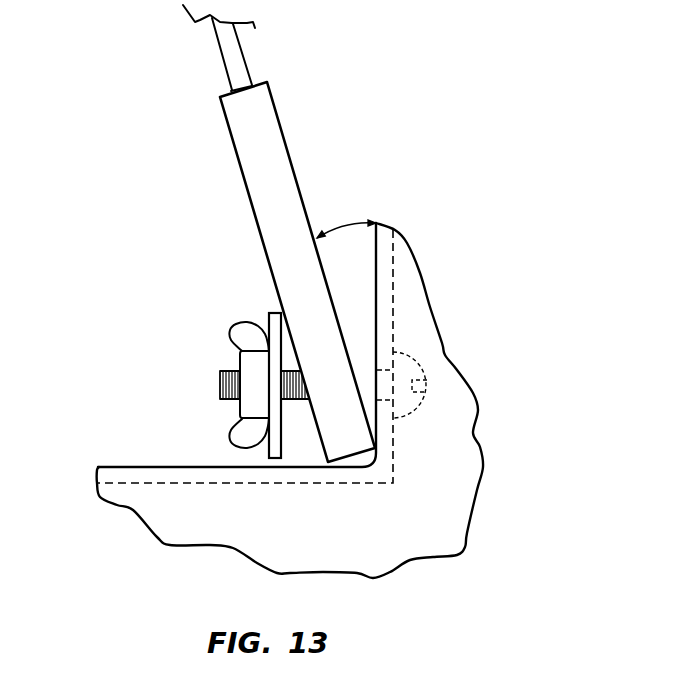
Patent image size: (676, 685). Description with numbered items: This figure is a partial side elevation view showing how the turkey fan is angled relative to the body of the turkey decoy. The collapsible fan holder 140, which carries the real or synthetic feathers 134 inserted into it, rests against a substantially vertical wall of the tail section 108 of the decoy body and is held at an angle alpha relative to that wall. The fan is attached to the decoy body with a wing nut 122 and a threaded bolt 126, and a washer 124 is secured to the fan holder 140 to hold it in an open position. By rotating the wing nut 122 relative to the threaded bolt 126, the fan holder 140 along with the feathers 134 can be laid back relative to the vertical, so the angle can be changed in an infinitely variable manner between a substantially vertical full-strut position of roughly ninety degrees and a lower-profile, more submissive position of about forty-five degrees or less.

The tail section 108 is at (379, 323).
The wing nut 122 is at (242, 352).
The washer 124 is at (268, 313).
The bolt 126 is at (220, 383).
The feathers 134 is at (232, 63).
The collapsible fan holder 140 is at (284, 150).